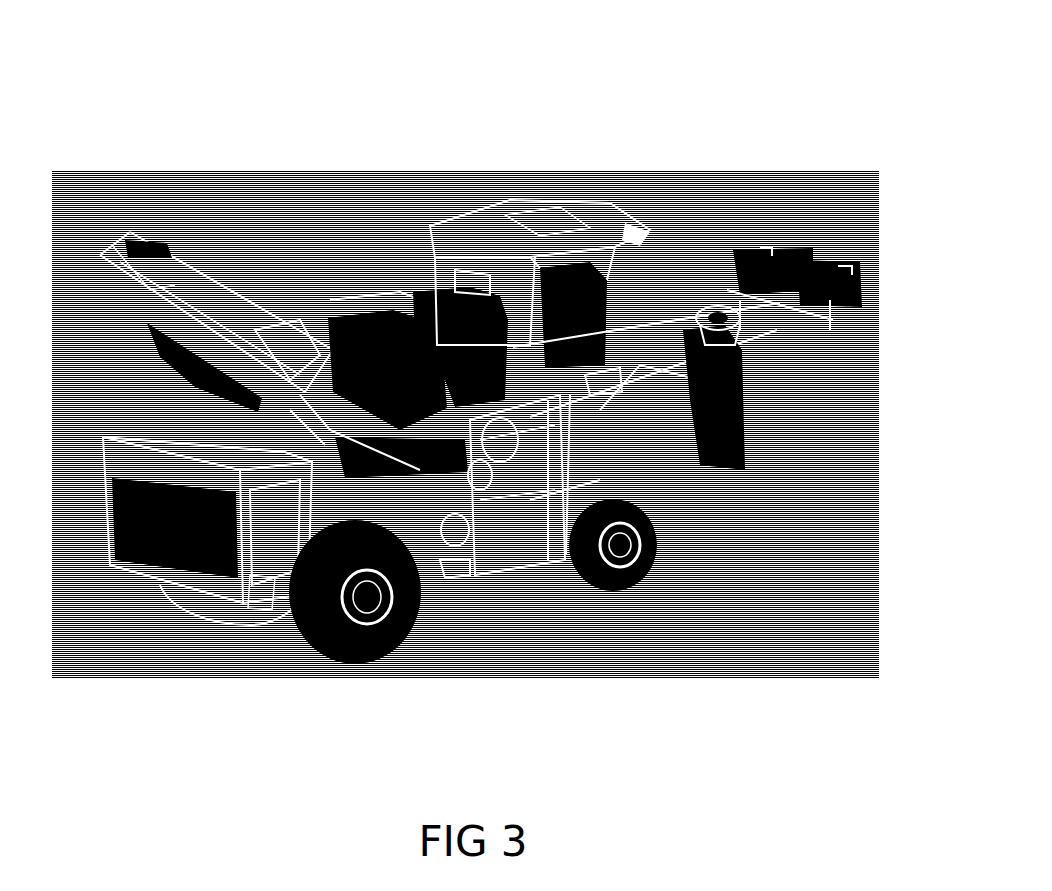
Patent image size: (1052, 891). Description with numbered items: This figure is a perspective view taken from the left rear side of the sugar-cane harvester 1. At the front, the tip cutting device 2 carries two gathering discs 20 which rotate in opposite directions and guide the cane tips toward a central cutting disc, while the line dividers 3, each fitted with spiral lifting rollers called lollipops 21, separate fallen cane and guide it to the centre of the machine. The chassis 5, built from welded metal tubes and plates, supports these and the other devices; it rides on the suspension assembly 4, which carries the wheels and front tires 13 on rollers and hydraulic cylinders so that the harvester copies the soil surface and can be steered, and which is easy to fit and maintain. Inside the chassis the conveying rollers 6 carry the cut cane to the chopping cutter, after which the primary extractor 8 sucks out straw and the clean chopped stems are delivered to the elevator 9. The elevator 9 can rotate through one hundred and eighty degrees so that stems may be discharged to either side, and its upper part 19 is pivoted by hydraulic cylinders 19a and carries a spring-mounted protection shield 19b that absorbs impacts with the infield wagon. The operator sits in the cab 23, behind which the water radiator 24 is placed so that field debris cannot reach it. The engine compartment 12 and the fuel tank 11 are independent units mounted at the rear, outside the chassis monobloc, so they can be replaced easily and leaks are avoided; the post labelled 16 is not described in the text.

The harvester 1 is at (565, 168).
The tip cutting device 2 is at (795, 248).
The line dividers 3 is at (730, 330).
The suspension assembly 4 is at (655, 495).
The chassis 5 is at (453, 572).
The conveying rollers 6 is at (515, 520).
The primary extractor 8 is at (356, 290).
The elevator 9 is at (310, 400).
The fuel tank 11 is at (245, 630).
The engine compartment 12 is at (128, 458).
The front tires 13 is at (378, 660).
The support post 16 is at (540, 532).
The upper part of the elevator 19 is at (150, 245).
The hydraulic cylinders 19a is at (295, 355).
The protection shield 19b is at (168, 360).
The gathering discs 20 is at (766, 246).
The lollipops 21 is at (735, 405).
The harvester cab 23 is at (600, 212).
The water radiator 24 is at (410, 290).